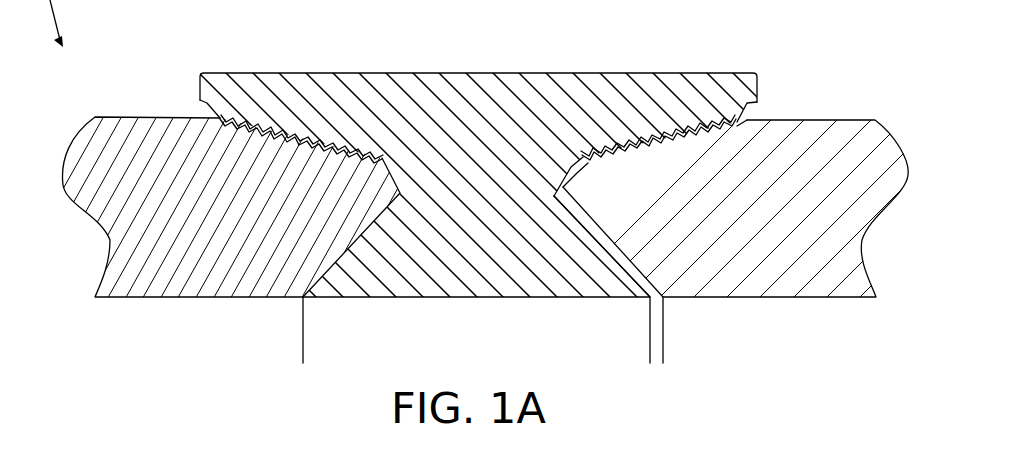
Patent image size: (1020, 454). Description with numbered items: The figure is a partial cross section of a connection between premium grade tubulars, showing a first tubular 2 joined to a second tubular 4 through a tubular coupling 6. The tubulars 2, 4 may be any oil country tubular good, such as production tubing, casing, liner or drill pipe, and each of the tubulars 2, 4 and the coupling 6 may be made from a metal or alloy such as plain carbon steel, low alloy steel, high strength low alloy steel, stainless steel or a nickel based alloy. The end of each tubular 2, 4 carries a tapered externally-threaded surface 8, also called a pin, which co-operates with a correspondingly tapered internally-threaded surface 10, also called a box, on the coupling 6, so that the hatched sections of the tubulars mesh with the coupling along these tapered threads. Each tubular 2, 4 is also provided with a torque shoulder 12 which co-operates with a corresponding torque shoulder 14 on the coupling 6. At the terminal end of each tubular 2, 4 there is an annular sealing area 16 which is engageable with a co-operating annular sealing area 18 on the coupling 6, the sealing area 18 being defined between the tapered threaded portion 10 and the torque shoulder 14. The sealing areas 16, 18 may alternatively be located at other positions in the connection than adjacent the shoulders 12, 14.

The first tubular 2 is at (95, 117).
The second tubular 4 is at (835, 120).
The tubular coupling 6 is at (490, 73).
The tapered externally-threaded surface 8 is at (733, 128).
The tapered internally-threaded surface 10 is at (673, 130).
The torque shoulder 12 is at (612, 270).
The torque shoulder 14 is at (563, 270).
The annular sealing area 16 is at (568, 187).
The annular sealing area 18 is at (566, 188).